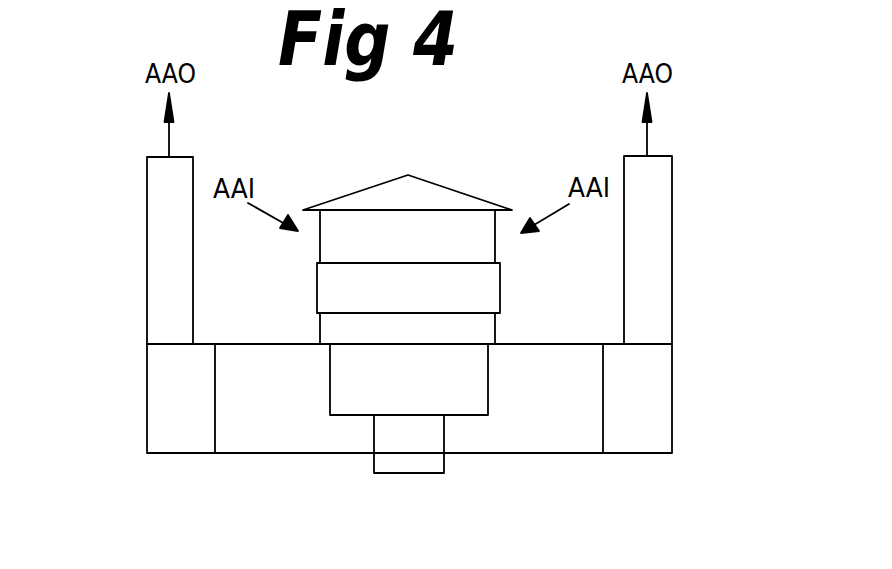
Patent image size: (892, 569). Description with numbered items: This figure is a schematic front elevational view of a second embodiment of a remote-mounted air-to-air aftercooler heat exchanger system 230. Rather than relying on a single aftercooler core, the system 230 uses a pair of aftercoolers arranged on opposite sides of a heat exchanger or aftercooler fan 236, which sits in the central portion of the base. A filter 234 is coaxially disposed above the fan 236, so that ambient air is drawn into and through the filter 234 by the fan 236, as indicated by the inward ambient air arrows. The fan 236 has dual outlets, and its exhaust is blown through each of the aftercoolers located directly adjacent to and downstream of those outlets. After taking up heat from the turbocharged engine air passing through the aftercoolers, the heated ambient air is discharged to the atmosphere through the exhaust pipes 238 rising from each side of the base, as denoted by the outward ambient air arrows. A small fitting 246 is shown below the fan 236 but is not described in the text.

The remote-mounted air-to-air aftercooler heat exchanger system 230 is at (687, 192).
The filter 234 is at (470, 292).
The heat exchanger or aftercooler fan 236 is at (451, 390).
The exhaust pipe 238 is at (162, 262).
The inlet connector 246 is at (394, 461).